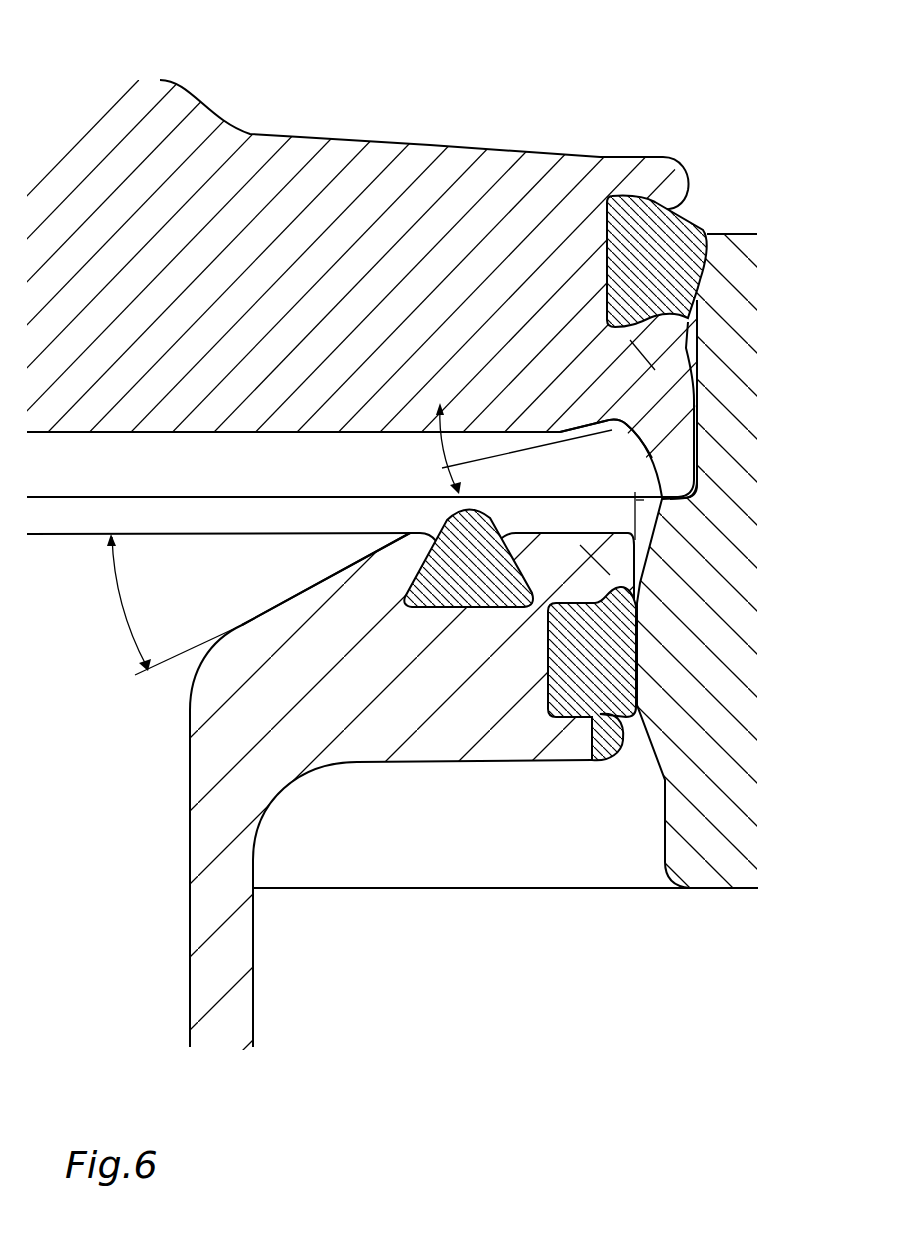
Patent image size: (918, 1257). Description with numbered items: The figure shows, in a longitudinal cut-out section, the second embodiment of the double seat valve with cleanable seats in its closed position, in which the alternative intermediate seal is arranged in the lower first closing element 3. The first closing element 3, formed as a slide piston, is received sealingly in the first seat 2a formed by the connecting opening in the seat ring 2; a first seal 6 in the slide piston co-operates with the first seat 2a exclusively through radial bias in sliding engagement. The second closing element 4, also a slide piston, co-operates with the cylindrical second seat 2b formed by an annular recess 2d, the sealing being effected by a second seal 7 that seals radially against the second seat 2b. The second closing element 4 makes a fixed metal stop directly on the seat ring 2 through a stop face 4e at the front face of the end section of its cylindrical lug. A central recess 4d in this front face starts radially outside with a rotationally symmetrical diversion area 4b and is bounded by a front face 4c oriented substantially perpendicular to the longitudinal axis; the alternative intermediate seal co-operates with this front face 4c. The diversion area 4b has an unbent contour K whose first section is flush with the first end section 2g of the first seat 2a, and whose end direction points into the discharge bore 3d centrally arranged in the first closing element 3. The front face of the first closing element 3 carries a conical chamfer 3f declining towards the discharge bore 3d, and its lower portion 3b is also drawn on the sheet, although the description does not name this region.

The seat ring 2 is at (680, 635).
The first seat 2a is at (636, 657).
The second seat 2b is at (700, 285).
The annular recess 2d is at (697, 300).
The first end section 2g is at (660, 521).
The first closing element 3 is at (371, 665).
The inner ring bore 3b is at (222, 949).
The discharge bore 3d is at (131, 814).
The conical chamfer 3f is at (242, 625).
The second closing element 4 is at (430, 241).
The diversion area 4b is at (609, 429).
The front face 4c is at (303, 433).
The central recess 4d is at (225, 475).
The stop face on the closing element side 4e is at (670, 513).
The first seal 6 is at (590, 672).
The second seal 7 is at (648, 262).
The contour of the diversion area K is at (636, 443).